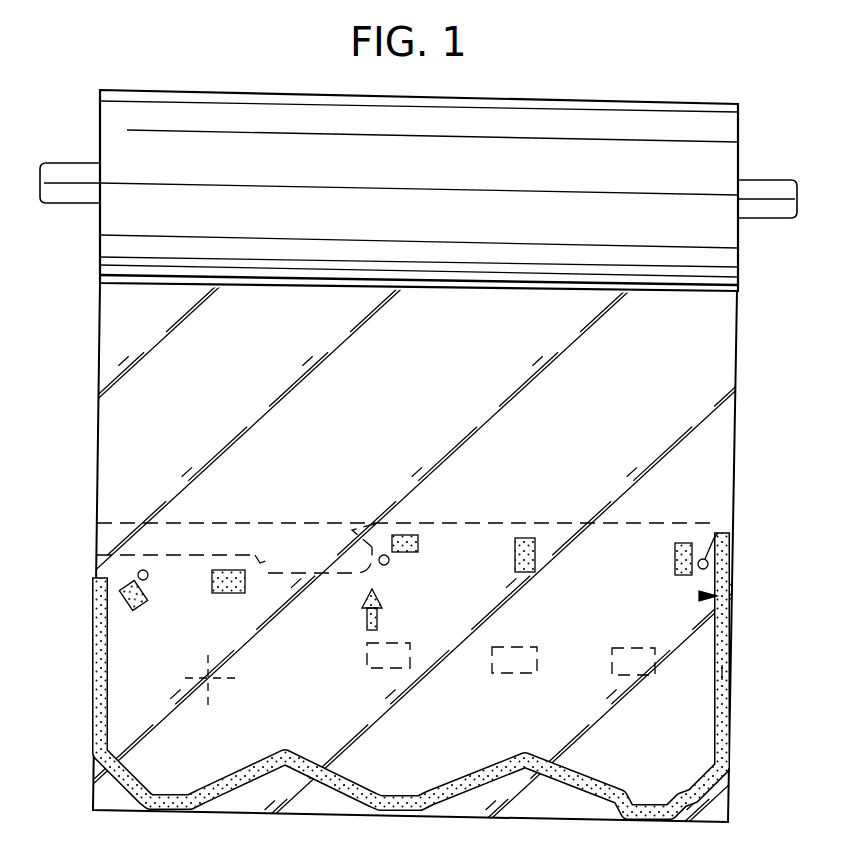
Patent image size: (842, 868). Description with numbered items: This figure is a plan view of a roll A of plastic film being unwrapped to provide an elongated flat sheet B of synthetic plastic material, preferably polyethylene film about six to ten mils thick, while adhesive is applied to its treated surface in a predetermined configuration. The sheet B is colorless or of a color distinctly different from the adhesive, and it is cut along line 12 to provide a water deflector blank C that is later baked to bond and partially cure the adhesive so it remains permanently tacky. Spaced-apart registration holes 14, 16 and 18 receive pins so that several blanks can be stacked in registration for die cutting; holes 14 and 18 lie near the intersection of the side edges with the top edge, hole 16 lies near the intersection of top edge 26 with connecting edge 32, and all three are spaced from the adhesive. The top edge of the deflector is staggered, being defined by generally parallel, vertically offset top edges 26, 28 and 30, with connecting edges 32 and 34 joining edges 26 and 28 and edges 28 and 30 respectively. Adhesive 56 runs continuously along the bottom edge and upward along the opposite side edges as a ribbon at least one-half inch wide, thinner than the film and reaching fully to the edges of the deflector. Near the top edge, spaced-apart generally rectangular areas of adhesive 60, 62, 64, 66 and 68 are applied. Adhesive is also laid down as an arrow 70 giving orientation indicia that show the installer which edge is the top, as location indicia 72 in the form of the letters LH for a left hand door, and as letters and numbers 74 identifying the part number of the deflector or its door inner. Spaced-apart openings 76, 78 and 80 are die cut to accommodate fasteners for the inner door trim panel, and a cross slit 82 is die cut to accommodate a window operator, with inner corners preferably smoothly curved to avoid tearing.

The roll of plastic film A is at (598, 96).
The plastic sheet B is at (88, 491).
The water deflector blank C is at (86, 648).
The cut line 12 is at (520, 523).
The registration hole 14 is at (718, 533).
The registration hole 16 is at (390, 563).
The registration hole 18 is at (138, 575).
The top edge 26 is at (427, 523).
The top edge 28 is at (292, 560).
The top edge 30 is at (165, 555).
The connecting edge 32 is at (354, 544).
The connecting edge 34 is at (273, 555).
The adhesive 56 is at (722, 673).
The rectangular area of adhesive 60 is at (676, 560).
The rectangular area of adhesive 62 is at (535, 545).
The rectangular area of adhesive 64 is at (403, 535).
The rectangular area of adhesive 66 is at (226, 594).
The rectangular area of adhesive 68 is at (120, 598).
The arrow 70 is at (362, 622).
The location indicia 72 is at (512, 614).
The letters and numbers 74 is at (722, 596).
The opening 76 is at (640, 674).
The opening 78 is at (514, 676).
The opening 80 is at (389, 668).
The cross slit 82 is at (222, 682).